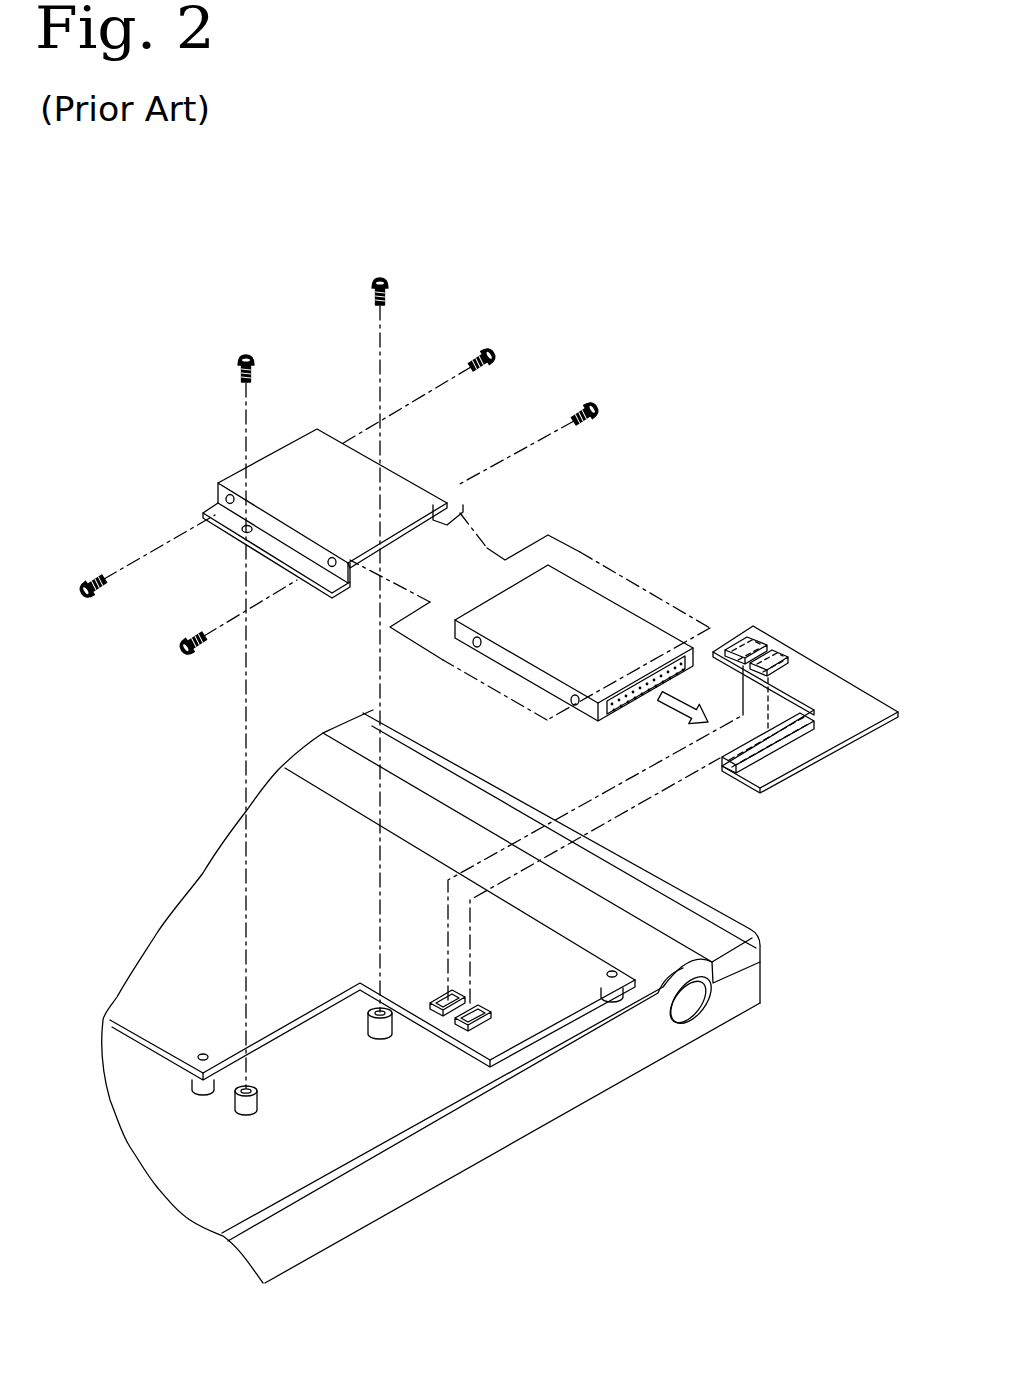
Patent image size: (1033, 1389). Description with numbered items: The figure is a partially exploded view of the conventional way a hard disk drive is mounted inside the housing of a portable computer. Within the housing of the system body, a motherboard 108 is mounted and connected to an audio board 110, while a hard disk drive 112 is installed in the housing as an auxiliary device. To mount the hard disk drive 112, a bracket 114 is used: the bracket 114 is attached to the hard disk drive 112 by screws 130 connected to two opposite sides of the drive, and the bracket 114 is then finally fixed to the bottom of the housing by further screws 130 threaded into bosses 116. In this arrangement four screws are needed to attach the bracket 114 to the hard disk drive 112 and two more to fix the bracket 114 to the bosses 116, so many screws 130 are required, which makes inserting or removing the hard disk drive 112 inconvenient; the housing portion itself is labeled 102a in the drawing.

The screws 130 is at (485, 352).
The bracket 114 is at (388, 481).
The hard disk drive 112 is at (614, 601).
The audio board 110 is at (818, 675).
The motherboard 108 is at (198, 920).
The bosses 116 is at (240, 1113).
The main body housing 102a is at (387, 1187).